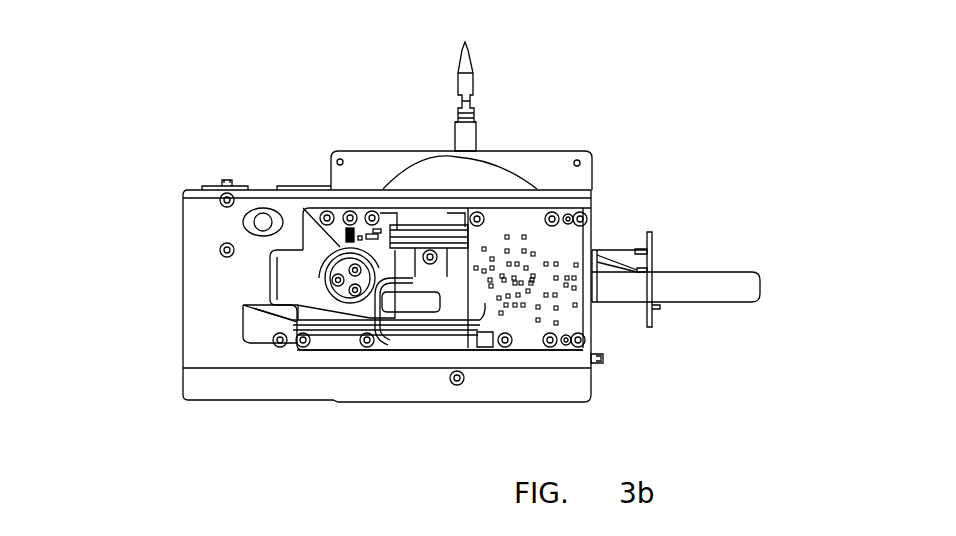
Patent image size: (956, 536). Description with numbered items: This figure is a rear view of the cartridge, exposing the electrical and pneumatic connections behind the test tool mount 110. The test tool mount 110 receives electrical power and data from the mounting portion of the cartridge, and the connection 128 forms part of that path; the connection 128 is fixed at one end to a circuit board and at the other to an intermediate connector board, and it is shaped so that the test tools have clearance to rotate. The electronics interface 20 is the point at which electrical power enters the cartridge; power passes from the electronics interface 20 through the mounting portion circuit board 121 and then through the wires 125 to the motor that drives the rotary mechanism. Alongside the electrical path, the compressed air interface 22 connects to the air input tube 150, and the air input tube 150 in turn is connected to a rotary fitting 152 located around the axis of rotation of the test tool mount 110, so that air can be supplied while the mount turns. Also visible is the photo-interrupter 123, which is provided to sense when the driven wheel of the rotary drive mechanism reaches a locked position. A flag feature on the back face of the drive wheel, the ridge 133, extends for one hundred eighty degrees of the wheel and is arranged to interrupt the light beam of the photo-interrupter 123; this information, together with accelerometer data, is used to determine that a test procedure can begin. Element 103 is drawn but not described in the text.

The antenna 103 is at (468, 87).
The test tool mount 110 is at (577, 178).
The mounting portion circuit board 121 is at (565, 247).
The connection 128 is at (720, 283).
The electronics interface 20 is at (607, 303).
The compressed air interface 22 is at (597, 361).
The ridge 133 is at (327, 245).
The photo-interrupter 123 is at (350, 228).
The rotary fitting 152 is at (458, 268).
The air input tube 150 is at (392, 345).
The wires 125 is at (243, 333).